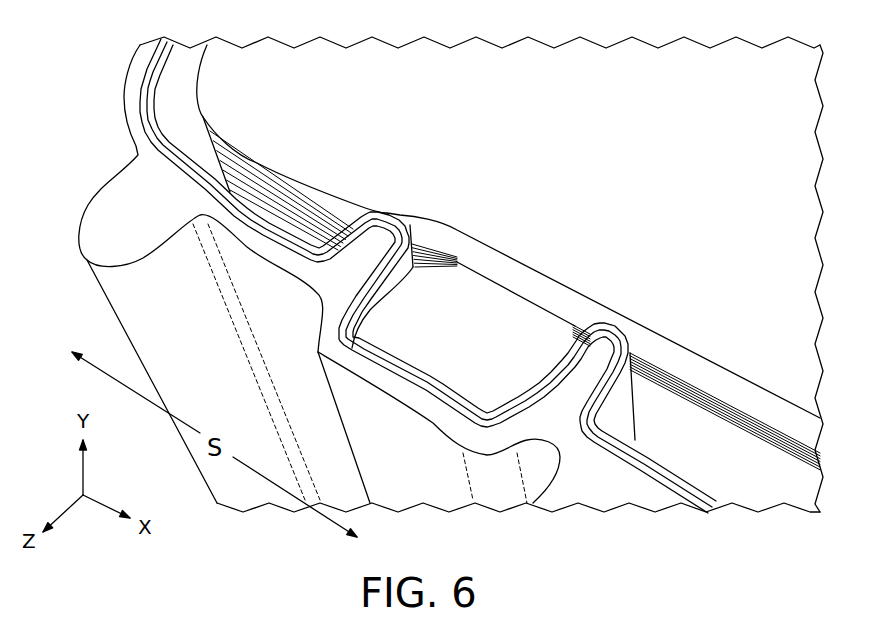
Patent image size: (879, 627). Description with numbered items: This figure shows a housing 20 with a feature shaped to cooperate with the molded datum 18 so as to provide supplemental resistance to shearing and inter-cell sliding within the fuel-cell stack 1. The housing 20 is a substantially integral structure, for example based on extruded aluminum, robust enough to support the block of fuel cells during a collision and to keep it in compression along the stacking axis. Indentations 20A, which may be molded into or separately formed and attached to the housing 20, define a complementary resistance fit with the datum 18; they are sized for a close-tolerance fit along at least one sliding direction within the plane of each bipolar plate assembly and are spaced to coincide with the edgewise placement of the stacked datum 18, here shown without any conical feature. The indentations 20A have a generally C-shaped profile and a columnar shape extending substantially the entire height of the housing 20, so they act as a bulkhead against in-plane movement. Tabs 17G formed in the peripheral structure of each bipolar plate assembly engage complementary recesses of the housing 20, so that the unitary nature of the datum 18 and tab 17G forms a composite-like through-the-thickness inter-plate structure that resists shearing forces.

The fuel-cell stack 1 is at (469, 118).
The datum 18 is at (428, 283).
The tabs 17G is at (553, 311).
The housing 20 is at (119, 206).
The indentations 20A is at (573, 440).